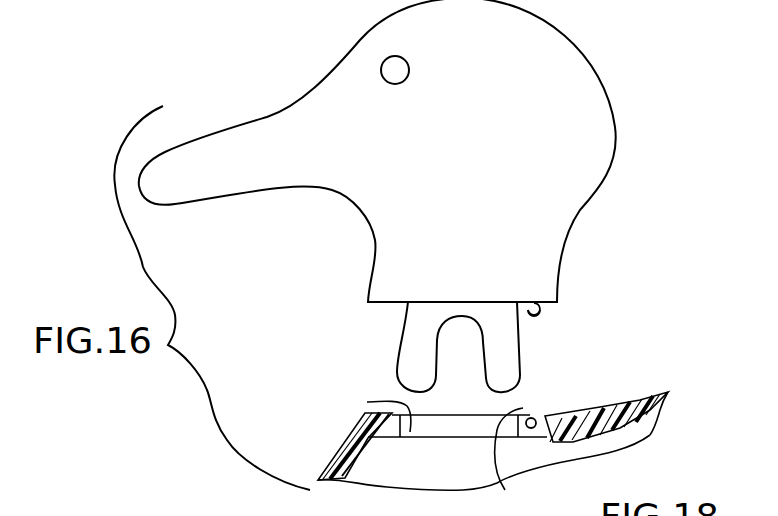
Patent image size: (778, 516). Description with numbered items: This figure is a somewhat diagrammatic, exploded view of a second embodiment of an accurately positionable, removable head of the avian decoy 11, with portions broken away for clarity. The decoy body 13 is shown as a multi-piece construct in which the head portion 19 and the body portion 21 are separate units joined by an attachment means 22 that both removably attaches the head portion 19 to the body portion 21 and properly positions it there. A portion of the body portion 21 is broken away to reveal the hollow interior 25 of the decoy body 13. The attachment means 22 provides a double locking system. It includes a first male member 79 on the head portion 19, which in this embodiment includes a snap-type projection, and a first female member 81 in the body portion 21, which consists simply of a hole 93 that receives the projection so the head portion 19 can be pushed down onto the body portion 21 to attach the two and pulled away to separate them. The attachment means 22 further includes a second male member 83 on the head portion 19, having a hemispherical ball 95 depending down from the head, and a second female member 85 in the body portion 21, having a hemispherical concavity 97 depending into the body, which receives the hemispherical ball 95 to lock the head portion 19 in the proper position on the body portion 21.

The decoy 11 is at (672, 53).
The decoy body 13 is at (647, 386).
The head portion 19 is at (571, 208).
The body portion 21 is at (575, 423).
The attachment means 22 is at (444, 369).
The hollow interior 25 is at (462, 476).
The first male member 79 is at (400, 330).
The first female member 81 is at (544, 353).
The second male member 83 is at (558, 304).
The second female member 85 is at (533, 418).
The hole 93 is at (410, 430).
The hemispherical ball 95 is at (525, 313).
The hemispherical concavity 97 is at (515, 456).